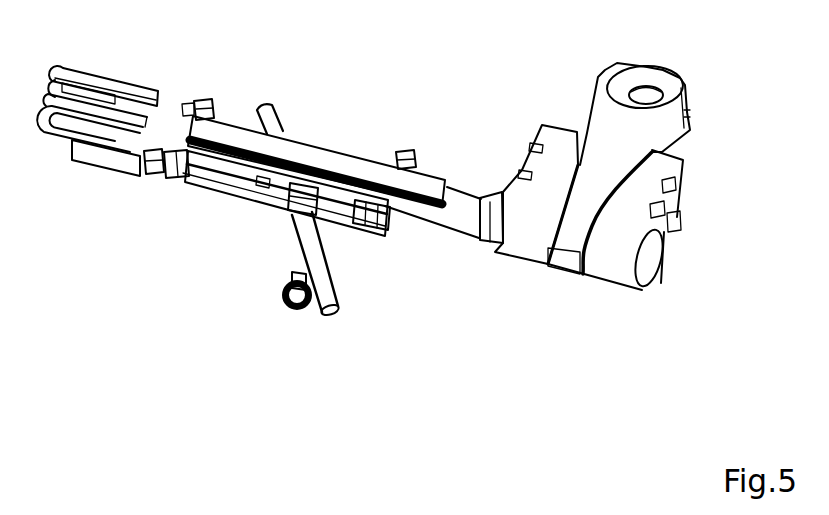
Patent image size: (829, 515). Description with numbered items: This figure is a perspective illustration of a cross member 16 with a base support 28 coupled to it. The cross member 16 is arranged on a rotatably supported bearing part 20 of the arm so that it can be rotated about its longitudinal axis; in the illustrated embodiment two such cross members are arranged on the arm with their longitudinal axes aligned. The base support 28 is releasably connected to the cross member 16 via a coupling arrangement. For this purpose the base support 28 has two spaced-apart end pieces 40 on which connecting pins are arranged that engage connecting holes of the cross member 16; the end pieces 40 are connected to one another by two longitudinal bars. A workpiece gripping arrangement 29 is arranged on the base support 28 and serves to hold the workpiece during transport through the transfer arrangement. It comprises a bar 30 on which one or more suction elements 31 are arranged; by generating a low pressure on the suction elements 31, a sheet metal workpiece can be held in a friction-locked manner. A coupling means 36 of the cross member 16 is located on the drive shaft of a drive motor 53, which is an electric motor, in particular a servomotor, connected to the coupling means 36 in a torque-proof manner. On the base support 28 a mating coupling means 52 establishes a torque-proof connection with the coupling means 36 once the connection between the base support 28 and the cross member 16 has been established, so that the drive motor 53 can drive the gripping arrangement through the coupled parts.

The cross member 16 is at (312, 158).
The bearing part 20 is at (598, 130).
The base support 28 is at (401, 251).
The workpiece gripping arrangement 29 is at (348, 334).
The bar 30 is at (315, 260).
The suction element 31 is at (283, 298).
The coupling means 36 is at (148, 172).
The end piece 40 is at (203, 100).
The mating coupling means 52 is at (152, 172).
The drive motor 53 is at (92, 160).